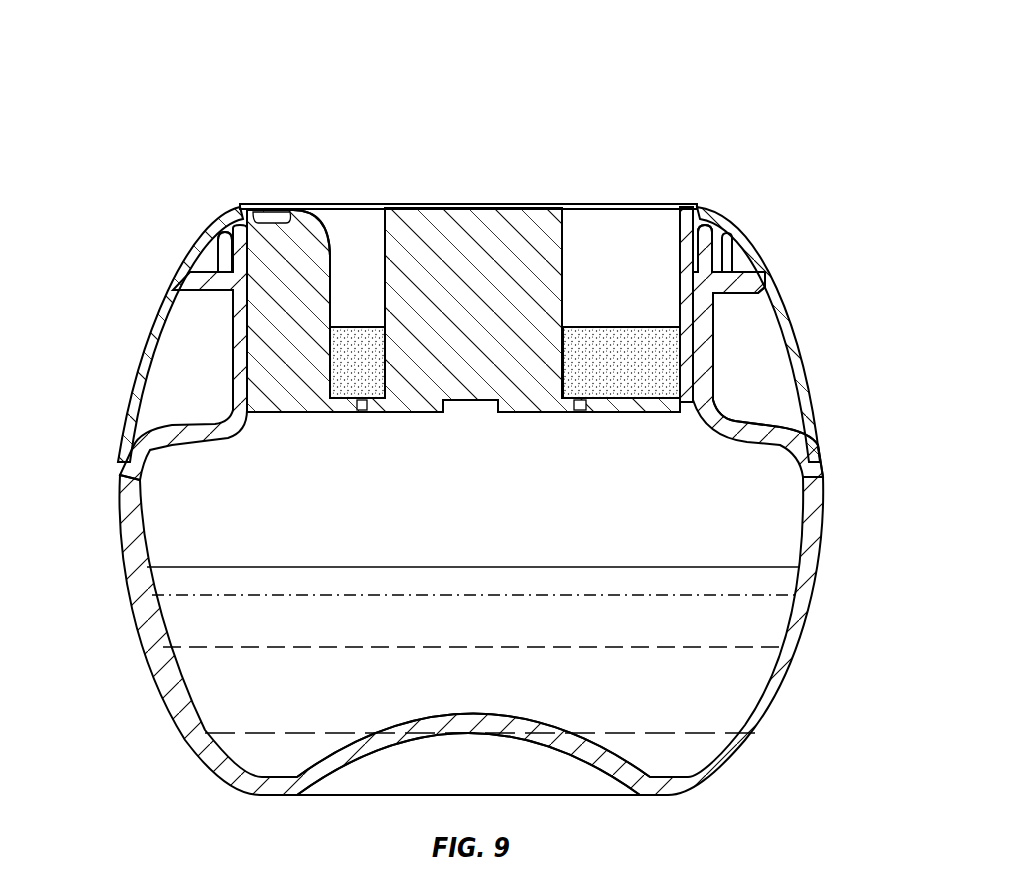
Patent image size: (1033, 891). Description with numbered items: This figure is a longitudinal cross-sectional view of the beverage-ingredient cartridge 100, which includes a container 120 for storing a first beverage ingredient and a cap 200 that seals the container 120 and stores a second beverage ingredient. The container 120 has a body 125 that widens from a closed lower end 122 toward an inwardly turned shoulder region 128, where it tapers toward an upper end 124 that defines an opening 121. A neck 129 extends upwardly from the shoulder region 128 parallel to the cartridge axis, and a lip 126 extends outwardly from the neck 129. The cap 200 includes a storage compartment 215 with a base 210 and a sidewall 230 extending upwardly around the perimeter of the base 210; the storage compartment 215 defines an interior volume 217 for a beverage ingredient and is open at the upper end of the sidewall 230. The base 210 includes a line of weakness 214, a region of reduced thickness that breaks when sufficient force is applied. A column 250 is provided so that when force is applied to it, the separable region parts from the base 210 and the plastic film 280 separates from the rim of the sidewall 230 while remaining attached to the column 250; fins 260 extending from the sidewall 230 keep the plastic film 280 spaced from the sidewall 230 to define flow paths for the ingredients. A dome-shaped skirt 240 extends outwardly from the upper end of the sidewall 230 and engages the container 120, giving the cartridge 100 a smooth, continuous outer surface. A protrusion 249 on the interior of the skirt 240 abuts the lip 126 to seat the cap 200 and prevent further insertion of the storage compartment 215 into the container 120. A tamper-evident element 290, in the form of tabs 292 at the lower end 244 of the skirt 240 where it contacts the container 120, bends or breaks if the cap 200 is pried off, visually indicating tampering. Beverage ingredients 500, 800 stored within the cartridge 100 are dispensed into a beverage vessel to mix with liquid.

The beverage-ingredient cartridge 100 is at (692, 93).
The container 120 is at (822, 568).
The opening 121 is at (240, 353).
The lower end 122 is at (665, 786).
The upper end 124 is at (731, 268).
The body 125 is at (780, 662).
The lip 126 is at (758, 277).
The shoulder region 128 is at (763, 427).
The neck 129 is at (710, 367).
The cap 200 is at (160, 266).
The base 210 is at (620, 410).
The line of weakness 214 is at (443, 410).
The storage compartment 215 is at (598, 233).
The interior volume 217 is at (664, 228).
The sidewall 230 is at (680, 278).
The skirt 240 is at (797, 322).
The lower end 244 is at (822, 450).
The protrusion 249 is at (227, 253).
The column 250 is at (471, 214).
The fins 260 is at (297, 235).
The plastic film 280 is at (353, 205).
The tamper-evident element 290 is at (117, 387).
The tabs 292 is at (120, 459).
The beverage ingredient 500 is at (193, 615).
The beverage ingredient 800 is at (612, 345).